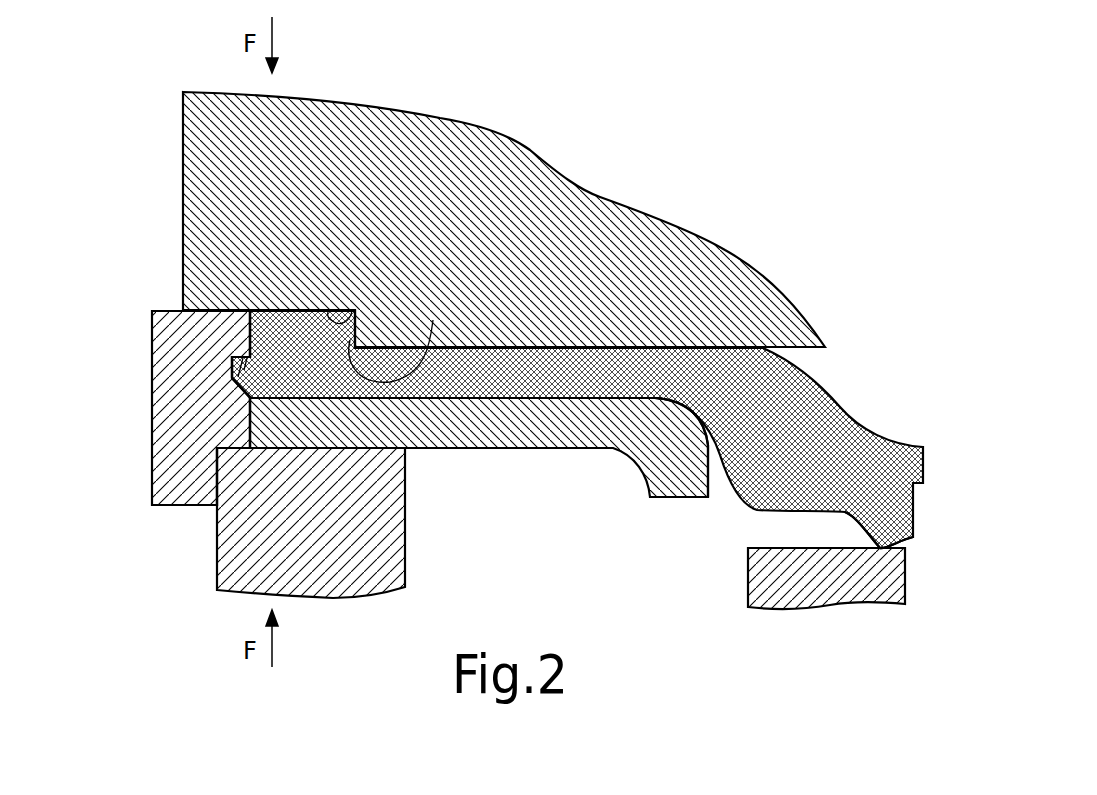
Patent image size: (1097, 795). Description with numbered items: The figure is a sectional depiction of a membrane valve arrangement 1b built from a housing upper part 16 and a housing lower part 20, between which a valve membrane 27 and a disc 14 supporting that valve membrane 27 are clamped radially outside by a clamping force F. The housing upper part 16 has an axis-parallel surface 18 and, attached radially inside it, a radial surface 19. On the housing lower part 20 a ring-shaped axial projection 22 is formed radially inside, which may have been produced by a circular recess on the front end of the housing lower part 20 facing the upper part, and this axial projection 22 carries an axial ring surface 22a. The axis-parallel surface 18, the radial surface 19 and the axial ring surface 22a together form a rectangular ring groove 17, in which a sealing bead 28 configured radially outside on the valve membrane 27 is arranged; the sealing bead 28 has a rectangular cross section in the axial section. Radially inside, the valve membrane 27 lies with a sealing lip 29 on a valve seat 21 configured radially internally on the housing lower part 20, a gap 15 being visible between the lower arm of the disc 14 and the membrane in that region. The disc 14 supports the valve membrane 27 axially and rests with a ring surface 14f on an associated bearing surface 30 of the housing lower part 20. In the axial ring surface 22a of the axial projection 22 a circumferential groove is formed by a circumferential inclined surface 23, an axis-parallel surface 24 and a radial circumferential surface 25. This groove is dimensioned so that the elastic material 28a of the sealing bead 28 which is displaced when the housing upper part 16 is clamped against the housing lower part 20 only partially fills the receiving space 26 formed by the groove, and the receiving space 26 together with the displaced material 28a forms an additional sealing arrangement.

The membrane valve arrangement 1b is at (851, 138).
The disc 14 is at (555, 450).
The ring surface 14f is at (305, 450).
The gap 15 is at (727, 477).
The housing upper part 16 is at (655, 217).
The rectangular ring groove 17 is at (342, 293).
The axis-parallel surface 18 is at (433, 320).
The radial surface 19 is at (358, 305).
The housing lower part 20 is at (405, 570).
The valve seat 21 is at (797, 545).
The ring-shaped axial projection 22 is at (163, 333).
The axial ring surface 22a is at (263, 310).
The circumferential inclined surface 23 is at (250, 403).
The axis-parallel surface 24 is at (232, 366).
The radial circumferential surface 25 is at (217, 310).
The receiving space 26 is at (250, 337).
The valve membrane 27 is at (867, 427).
The sealing bead 28 is at (297, 310).
The elastic material 28a is at (235, 385).
The sealing lip 29 is at (900, 540).
The bearing surface 30 is at (433, 450).